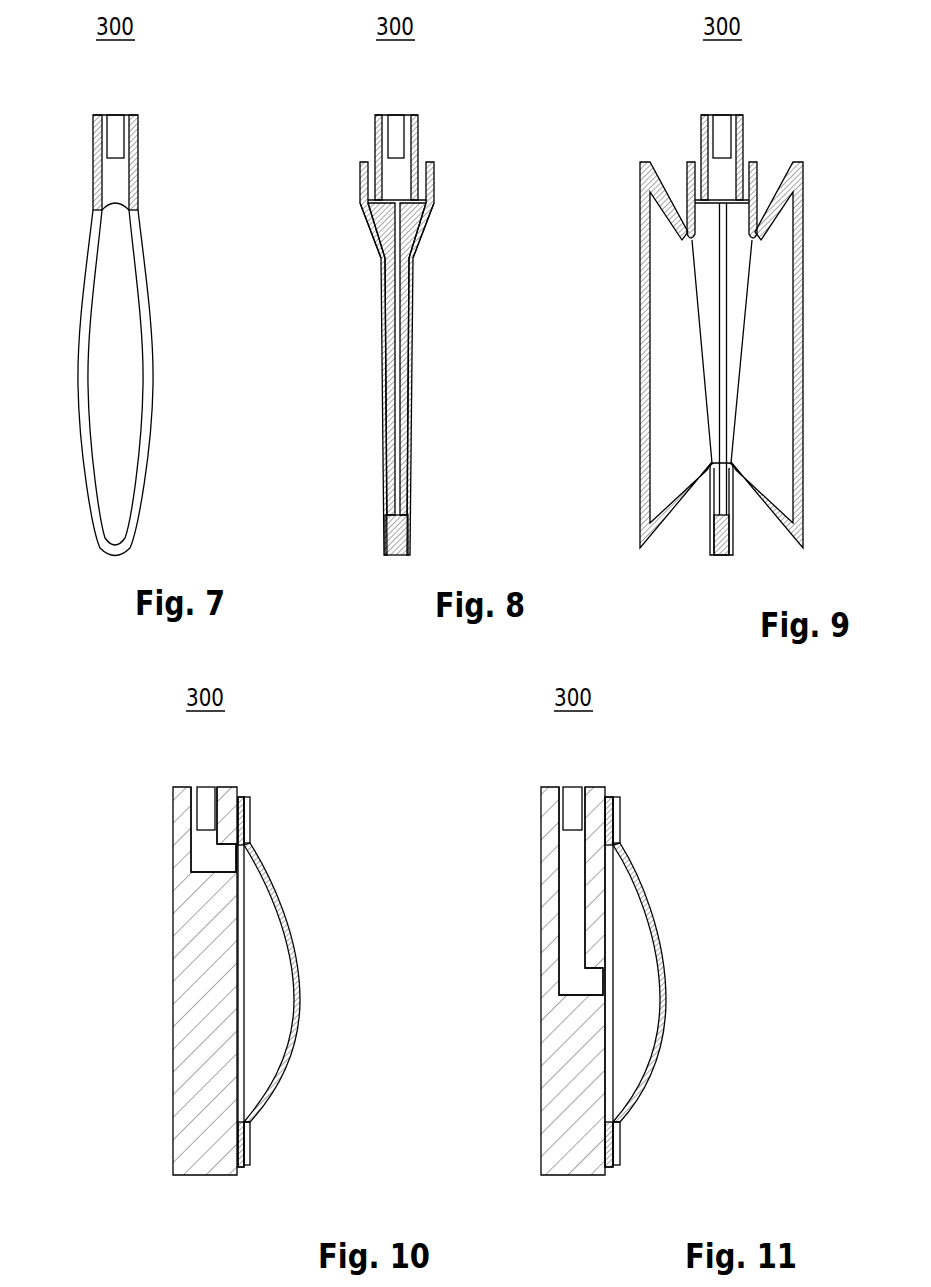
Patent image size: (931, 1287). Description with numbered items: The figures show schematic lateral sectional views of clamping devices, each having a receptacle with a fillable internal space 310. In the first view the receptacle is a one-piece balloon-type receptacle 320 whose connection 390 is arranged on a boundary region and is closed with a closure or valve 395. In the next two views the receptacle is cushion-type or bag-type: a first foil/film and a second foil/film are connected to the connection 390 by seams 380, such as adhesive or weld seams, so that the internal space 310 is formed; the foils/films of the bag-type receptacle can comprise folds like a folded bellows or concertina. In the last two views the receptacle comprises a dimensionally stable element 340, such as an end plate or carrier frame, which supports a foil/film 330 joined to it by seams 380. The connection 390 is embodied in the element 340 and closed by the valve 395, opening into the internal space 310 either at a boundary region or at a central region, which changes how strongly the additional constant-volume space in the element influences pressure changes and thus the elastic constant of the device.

In FIG. 7, the internal space 310 is at (100, 378).
In FIG. 8, the internal space 310 is at (385, 212).
In FIG. 9, the internal space 310 is at (670, 360).
In FIG. 10, the internal space 310 is at (260, 918).
In FIG. 11, the internal space 310 is at (628, 918).
In FIG. 7, the balloon-type receptacle 320 is at (147, 300).
In FIG. 10, the foil/film 330 is at (263, 870).
In FIG. 11, the foil/film 330 is at (631, 870).
In FIG. 10, the element 340 is at (205, 1180).
In FIG. 11, the element 340 is at (573, 1180).
In FIG. 8, the seams 380 is at (418, 160).
In FIG. 9, the seams 380 is at (750, 160).
In FIG. 10, the seams 380 is at (239, 797).
In FIG. 11, the seams 380 is at (607, 797).
In FIG. 7, the connection 390 is at (100, 113).
In FIG. 8, the connection 390 is at (383, 113).
In FIG. 9, the connection 390 is at (708, 113).
In FIG. 10, the connection 390 is at (183, 793).
In FIG. 11, the connection 390 is at (551, 793).
In FIG. 7, the closure or valve 395 is at (117, 113).
In FIG. 8, the closure or valve 395 is at (400, 113).
In FIG. 9, the closure or valve 395 is at (725, 113).
In FIG. 10, the closure or valve 395 is at (205, 790).
In FIG. 11, the closure or valve 395 is at (573, 790).